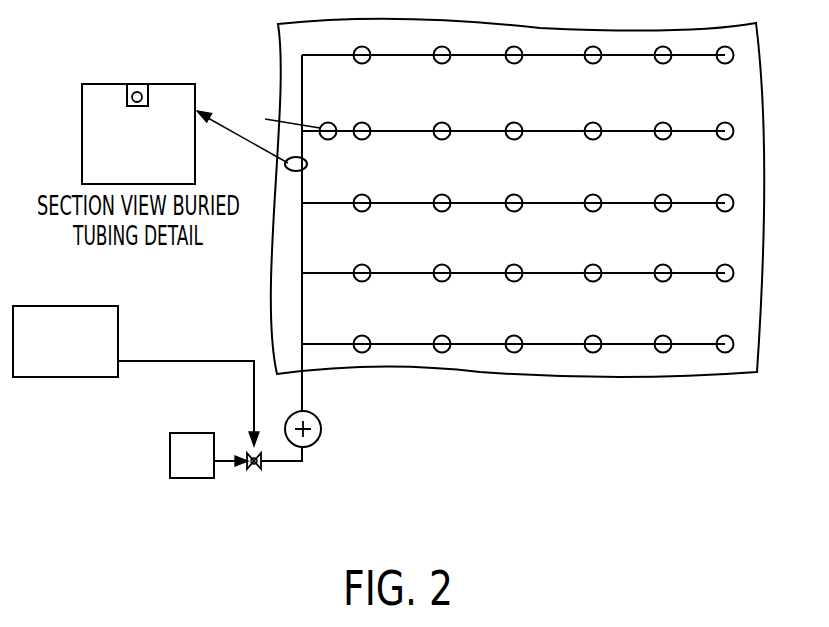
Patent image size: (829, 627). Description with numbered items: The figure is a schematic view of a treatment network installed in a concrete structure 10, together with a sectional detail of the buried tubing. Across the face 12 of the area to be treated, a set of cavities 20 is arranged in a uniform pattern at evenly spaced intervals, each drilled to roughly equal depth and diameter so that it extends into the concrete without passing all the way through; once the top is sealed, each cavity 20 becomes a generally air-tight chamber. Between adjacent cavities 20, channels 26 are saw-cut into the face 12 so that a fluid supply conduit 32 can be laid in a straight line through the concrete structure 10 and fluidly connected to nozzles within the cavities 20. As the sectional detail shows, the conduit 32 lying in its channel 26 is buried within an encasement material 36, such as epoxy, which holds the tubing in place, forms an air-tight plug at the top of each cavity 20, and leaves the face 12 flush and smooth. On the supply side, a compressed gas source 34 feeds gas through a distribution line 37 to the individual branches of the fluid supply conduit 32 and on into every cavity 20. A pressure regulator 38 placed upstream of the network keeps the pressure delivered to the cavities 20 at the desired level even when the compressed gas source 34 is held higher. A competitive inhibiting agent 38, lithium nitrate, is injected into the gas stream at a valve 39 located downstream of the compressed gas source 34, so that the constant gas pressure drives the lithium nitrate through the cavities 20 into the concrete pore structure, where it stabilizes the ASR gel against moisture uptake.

The concrete structure 10 is at (70, 128).
The face 12 is at (110, 84).
The cavities 20 is at (599, 124).
The channels 26 is at (137, 104).
The fluid supply conduit 32 is at (393, 132).
The compressed gas source 34 is at (192, 478).
The encasement material 36 is at (133, 86).
The distribution line 37 is at (304, 401).
The pressure regulator 38 is at (62, 377).
The valve 39 is at (255, 474).